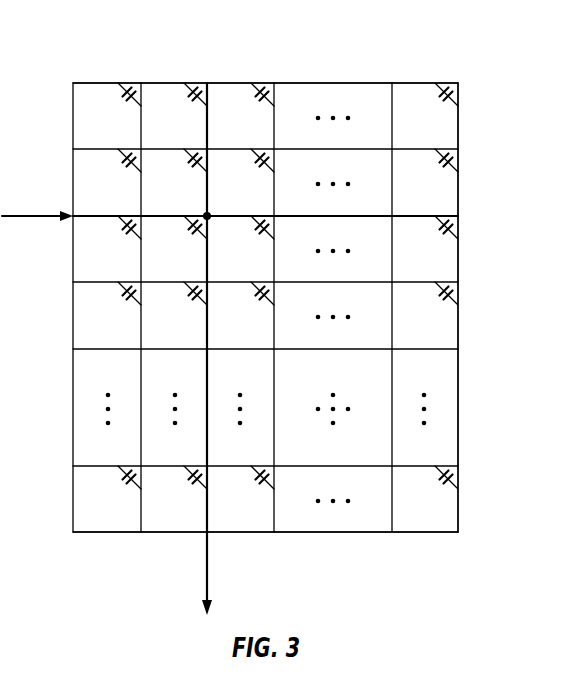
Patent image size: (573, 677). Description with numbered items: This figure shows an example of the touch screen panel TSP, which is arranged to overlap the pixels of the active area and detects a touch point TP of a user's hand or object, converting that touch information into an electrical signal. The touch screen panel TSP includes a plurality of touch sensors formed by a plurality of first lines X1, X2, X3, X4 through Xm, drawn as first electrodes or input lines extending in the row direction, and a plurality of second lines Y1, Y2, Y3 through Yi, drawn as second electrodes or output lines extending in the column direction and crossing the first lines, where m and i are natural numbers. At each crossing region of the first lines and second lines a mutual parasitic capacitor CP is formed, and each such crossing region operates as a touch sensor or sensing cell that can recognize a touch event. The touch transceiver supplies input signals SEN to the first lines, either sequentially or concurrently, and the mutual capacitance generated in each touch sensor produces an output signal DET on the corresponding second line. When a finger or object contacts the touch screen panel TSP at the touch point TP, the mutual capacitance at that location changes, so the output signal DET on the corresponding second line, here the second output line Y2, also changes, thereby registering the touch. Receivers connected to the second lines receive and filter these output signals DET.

The first line X1 is at (87, 84).
The first line X2 is at (87, 150).
The first line X3 is at (87, 217).
The first line X4 is at (87, 283).
The first line Xm is at (87, 467).
The second line Y1 is at (142, 97).
The second line Y2 is at (208, 97).
The second line Y3 is at (275, 97).
The second line Yi is at (459, 97).
The input signal SEN is at (37, 207).
The output signal DET is at (227, 573).
The touch point TP is at (210, 212).
The mutual parasitic capacitor CP is at (460, 218).
The touch screen panel TSP is at (460, 408).